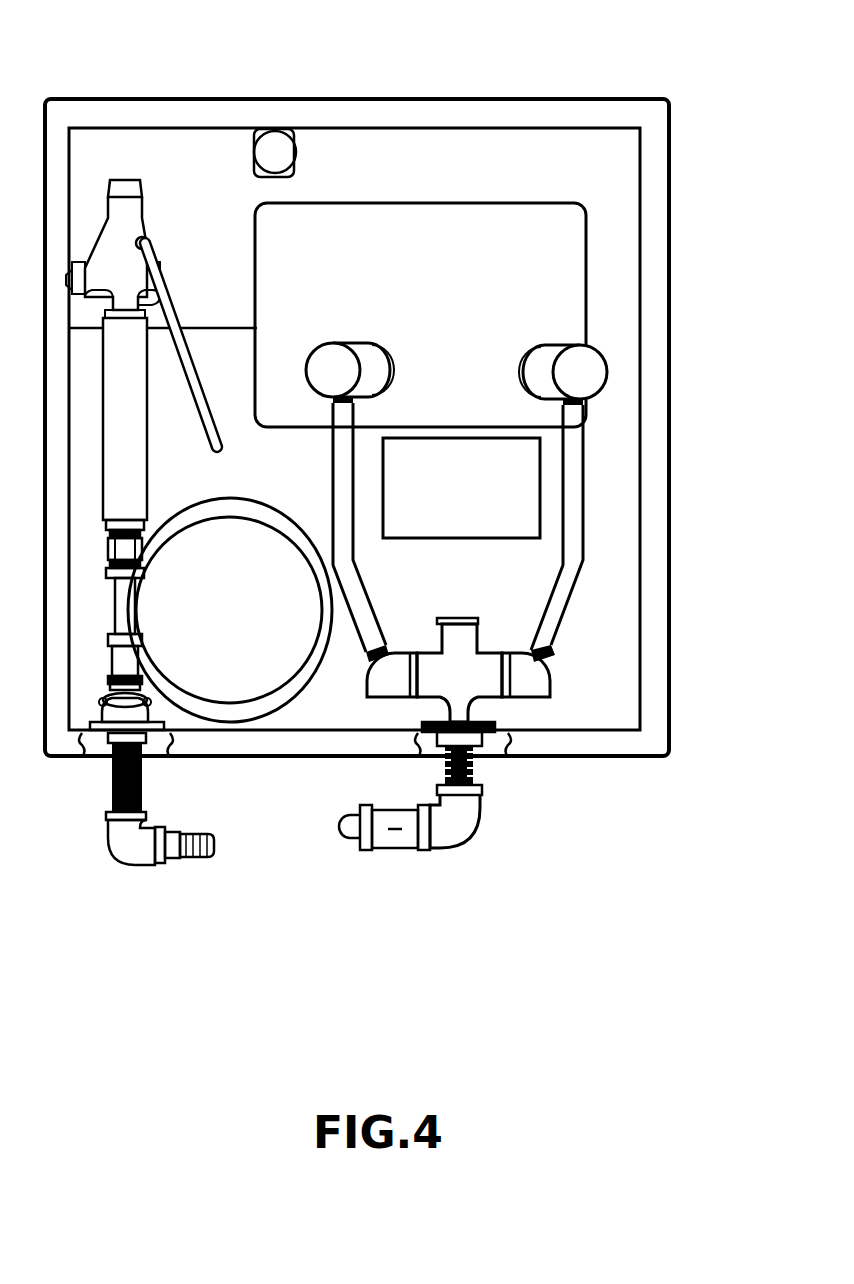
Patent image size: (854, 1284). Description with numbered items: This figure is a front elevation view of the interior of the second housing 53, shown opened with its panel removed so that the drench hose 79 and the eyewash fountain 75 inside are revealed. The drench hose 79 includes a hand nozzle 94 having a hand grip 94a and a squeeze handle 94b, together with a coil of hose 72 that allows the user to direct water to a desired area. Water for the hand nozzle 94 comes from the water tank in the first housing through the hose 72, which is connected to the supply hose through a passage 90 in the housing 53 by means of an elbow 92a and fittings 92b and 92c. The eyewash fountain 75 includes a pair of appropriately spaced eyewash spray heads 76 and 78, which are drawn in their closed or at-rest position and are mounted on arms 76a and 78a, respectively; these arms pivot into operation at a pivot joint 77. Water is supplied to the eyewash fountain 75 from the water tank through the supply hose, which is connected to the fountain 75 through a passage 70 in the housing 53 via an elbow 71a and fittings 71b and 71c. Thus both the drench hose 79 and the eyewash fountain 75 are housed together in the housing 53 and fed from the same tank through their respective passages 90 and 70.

The second housing 53 is at (648, 233).
The passage 70 is at (505, 755).
The elbow 71a is at (448, 828).
The fitting 71b is at (345, 828).
The fitting 71c is at (496, 733).
The coil of hose 72 is at (187, 520).
The eyewash fountain 75 is at (470, 227).
The eyewash spray head 76 is at (375, 347).
The arm 76a is at (342, 508).
The pivot joint 77 is at (483, 660).
The eyewash spray head 78 is at (540, 353).
The arm 78a is at (582, 470).
The drench hose 79 is at (162, 165).
The passage 90 is at (102, 736).
The elbow 92a is at (130, 842).
The fitting 92b is at (197, 860).
The fitting 92c is at (173, 755).
The hand nozzle 94 is at (132, 225).
The hand grip 94a is at (135, 428).
The squeeze handle 94b is at (192, 335).